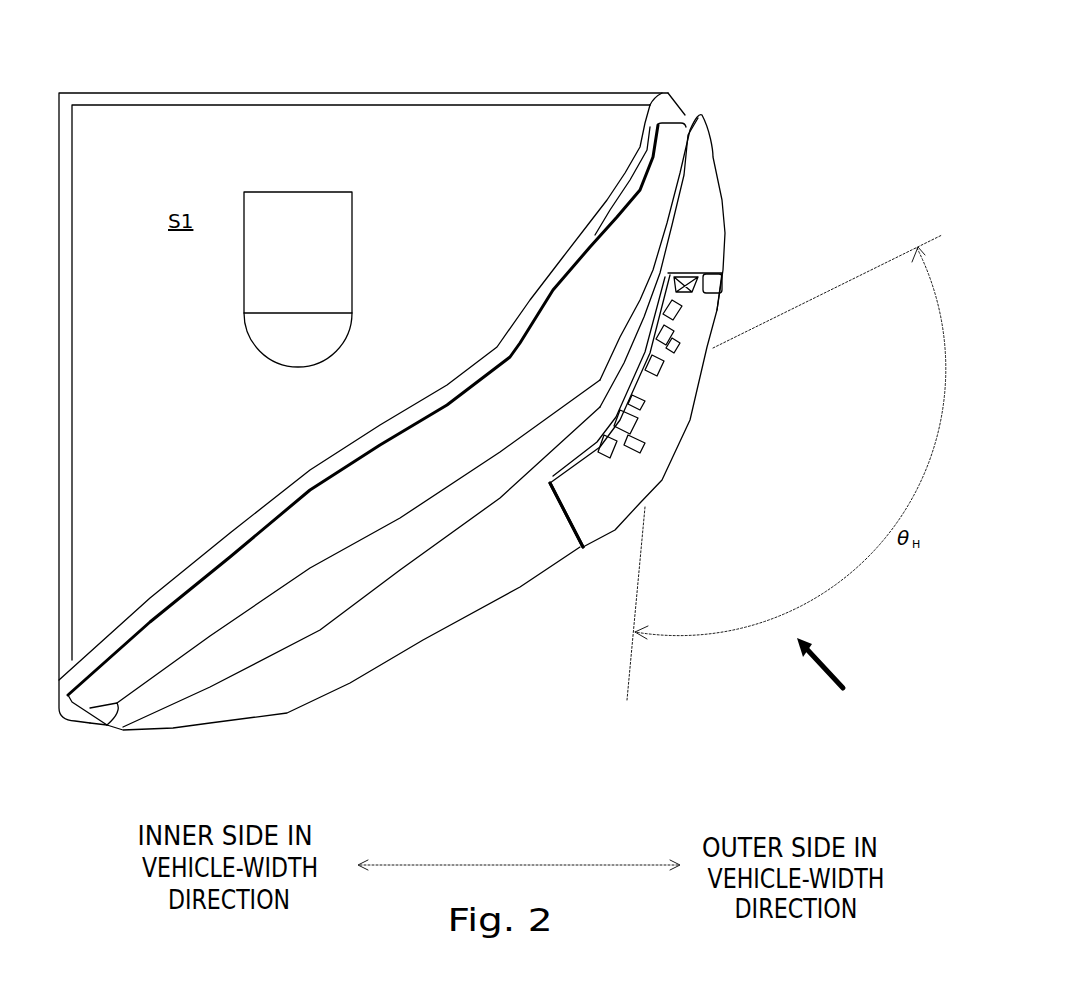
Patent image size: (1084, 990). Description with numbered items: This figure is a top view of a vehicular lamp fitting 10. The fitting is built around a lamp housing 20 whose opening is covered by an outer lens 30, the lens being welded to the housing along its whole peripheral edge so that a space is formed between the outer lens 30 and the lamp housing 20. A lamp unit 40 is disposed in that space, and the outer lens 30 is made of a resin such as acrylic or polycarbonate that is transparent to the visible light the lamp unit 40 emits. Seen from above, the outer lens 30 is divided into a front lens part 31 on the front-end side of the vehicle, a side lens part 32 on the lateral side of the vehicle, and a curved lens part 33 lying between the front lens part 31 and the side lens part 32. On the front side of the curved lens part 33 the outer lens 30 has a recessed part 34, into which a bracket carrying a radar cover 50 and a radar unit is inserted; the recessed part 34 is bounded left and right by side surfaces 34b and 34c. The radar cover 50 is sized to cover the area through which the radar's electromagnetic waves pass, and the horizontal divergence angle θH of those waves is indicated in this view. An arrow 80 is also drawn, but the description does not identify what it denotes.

The vehicular lamp fitting 10 is at (462, 66).
The lamp housing 20 is at (292, 93).
The outer lens 30 is at (340, 678).
The front lens part 31 is at (402, 642).
The side lens part 32 is at (728, 230).
The curved lens part 33 is at (632, 382).
The recessed part 34 is at (578, 522).
The side surface 34b is at (591, 566).
The side surface 34c is at (722, 288).
The lamp unit 40 is at (304, 192).
The radar cover 50 is at (675, 450).
The detection direction arrow 80 is at (833, 670).